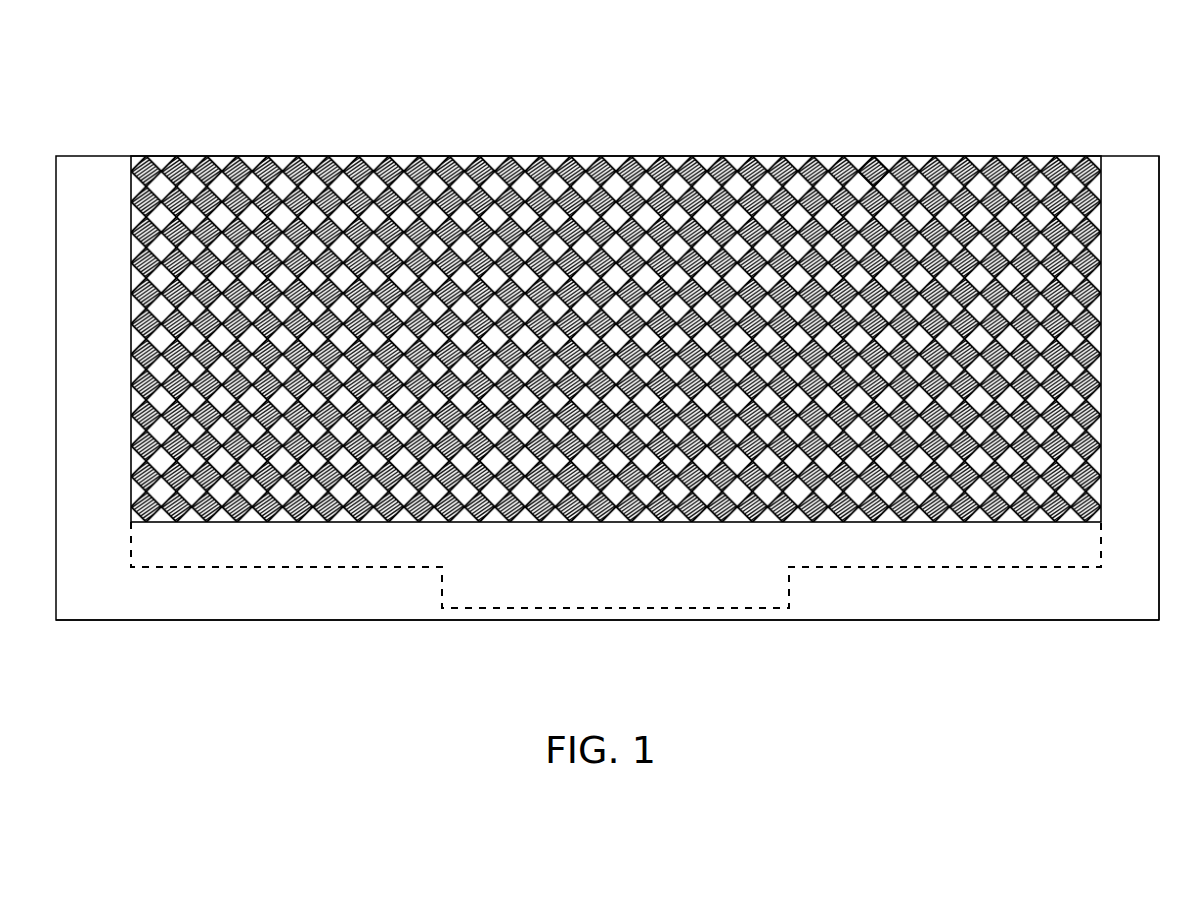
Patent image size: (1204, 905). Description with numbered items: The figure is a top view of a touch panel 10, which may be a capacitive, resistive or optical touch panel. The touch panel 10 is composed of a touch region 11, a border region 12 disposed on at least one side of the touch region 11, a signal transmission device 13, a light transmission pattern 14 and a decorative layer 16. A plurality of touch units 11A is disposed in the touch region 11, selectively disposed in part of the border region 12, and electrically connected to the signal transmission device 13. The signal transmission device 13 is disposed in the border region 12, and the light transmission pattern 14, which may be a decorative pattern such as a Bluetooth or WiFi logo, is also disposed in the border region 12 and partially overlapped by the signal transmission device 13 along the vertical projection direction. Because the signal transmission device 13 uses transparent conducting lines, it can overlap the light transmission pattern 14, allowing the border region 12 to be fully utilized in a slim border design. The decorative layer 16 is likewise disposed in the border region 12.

The touch panel 10 is at (1056, 88).
The touch region 11 is at (643, 157).
The touch units 11A is at (866, 162).
The border region 12 is at (873, 621).
The signal transmission device 13 is at (622, 608).
The light transmission pattern 14 is at (398, 605).
The decorative layer 16 is at (1141, 597).